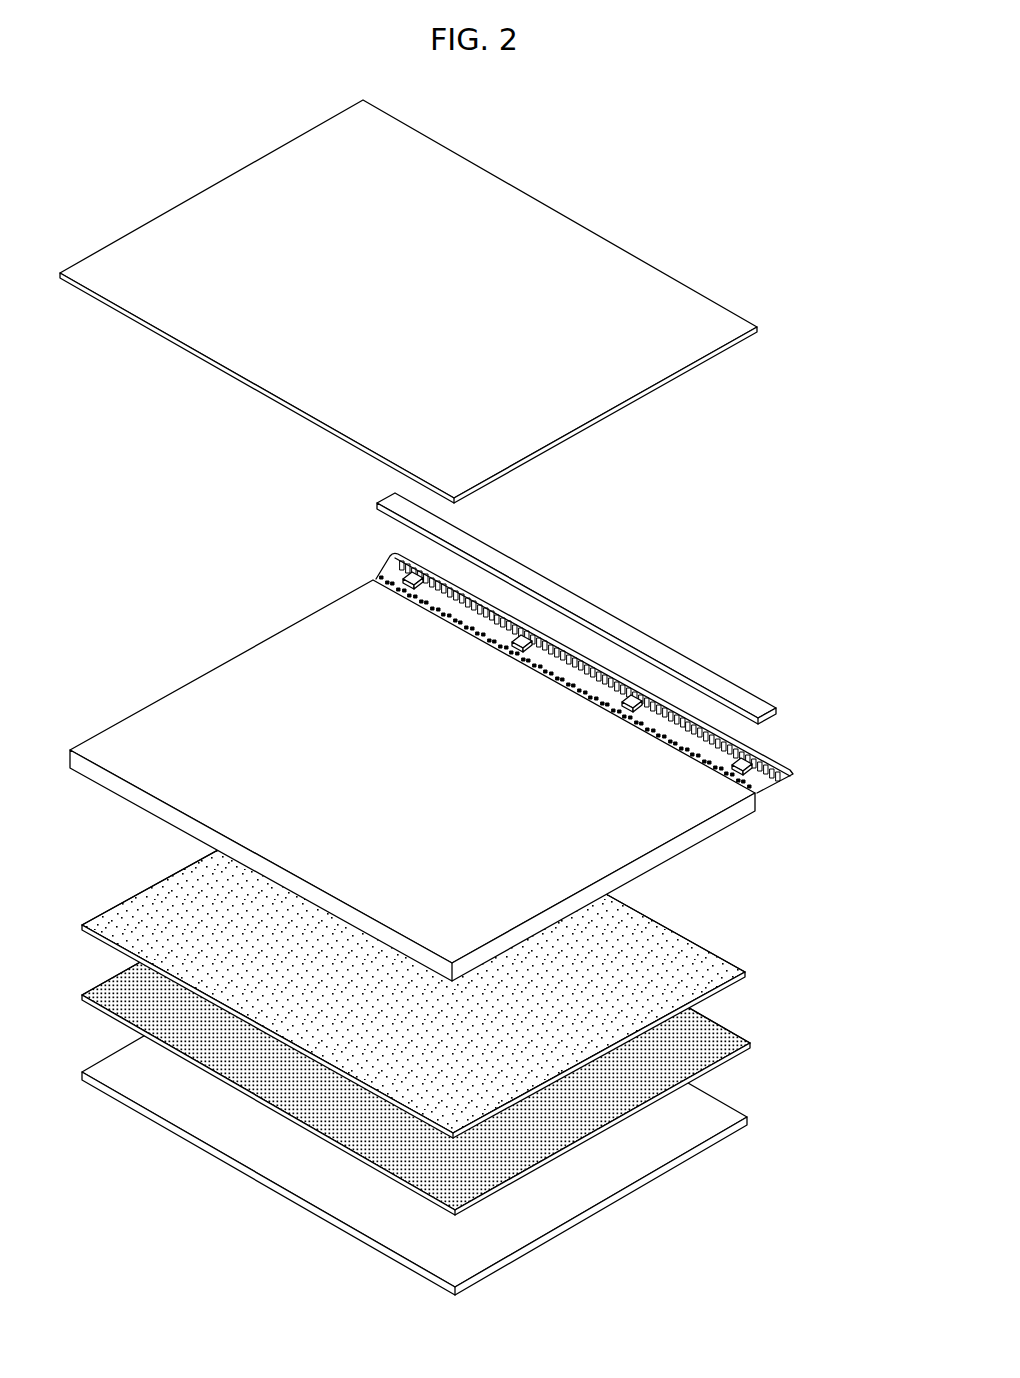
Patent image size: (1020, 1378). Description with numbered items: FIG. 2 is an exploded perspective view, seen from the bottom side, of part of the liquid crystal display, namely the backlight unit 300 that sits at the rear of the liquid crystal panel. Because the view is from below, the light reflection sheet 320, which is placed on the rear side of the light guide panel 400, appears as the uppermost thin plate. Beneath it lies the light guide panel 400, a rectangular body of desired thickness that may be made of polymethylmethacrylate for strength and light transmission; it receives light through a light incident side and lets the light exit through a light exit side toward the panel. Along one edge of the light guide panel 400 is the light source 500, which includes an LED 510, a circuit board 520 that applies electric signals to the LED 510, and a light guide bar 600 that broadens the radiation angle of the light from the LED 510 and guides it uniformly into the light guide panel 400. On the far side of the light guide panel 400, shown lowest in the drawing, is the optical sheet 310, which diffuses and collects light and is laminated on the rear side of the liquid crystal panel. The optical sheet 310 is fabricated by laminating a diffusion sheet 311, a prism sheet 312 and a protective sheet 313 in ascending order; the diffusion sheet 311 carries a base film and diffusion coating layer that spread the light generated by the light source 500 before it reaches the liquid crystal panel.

The backlight unit 300 is at (476, 692).
The optical sheet 310 is at (487, 1029).
The diffusion sheet 311 is at (852, 1100).
The prism sheet 312 is at (725, 1033).
The protective sheet 313 is at (718, 1115).
The light reflection sheet 320 is at (235, 190).
The light guide panel 400 is at (245, 665).
The light source 500 is at (629, 657).
The LED 510 is at (750, 773).
The circuit board 520 is at (628, 637).
The light guide bar 600 is at (778, 764).